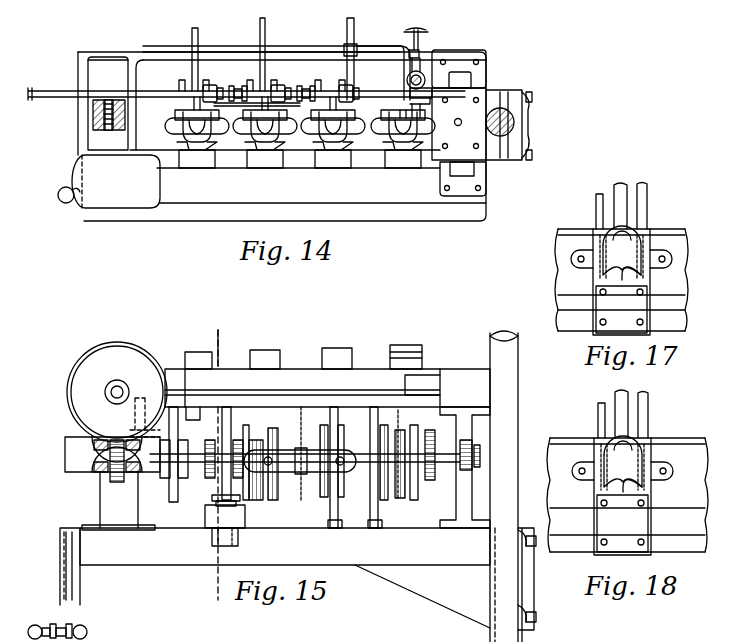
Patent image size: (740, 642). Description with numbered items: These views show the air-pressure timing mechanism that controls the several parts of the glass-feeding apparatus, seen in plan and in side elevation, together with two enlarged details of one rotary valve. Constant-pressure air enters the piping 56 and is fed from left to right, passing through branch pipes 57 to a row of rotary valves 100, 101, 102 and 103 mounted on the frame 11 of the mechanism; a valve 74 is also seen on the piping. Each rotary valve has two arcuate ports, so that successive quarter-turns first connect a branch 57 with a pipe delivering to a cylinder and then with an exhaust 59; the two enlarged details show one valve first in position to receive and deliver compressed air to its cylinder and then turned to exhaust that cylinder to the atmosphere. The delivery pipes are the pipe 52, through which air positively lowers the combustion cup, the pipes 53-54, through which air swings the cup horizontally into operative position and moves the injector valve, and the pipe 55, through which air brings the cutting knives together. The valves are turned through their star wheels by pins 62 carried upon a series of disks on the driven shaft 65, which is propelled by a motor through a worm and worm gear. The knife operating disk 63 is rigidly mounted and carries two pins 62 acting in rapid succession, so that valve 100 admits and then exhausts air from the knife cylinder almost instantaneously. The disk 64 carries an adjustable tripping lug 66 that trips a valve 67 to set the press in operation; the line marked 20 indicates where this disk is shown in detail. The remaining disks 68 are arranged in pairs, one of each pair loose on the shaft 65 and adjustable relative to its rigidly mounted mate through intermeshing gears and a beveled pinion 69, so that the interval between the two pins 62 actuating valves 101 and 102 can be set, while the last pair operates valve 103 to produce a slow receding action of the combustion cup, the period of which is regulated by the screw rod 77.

In FIG. 14, the frame / bed of the machine 11 is at (462, 176).
In FIG. 15, the frame / bed of the machine 11 is at (478, 382).
In FIG. 17, the frame / bed of the machine 11 is at (621, 280).
In FIG. 18, the frame / bed of the machine 11 is at (627, 495).
In FIG. 15, the center line of machine 20 is at (215, 457).
In FIG. 14, the pipe 52 is at (354, 40).
In FIG. 14, the pipes 53-54 is at (265, 43).
In FIG. 14, the pipe 55 is at (198, 43).
In FIG. 17, the pipe 55 is at (618, 190).
In FIG. 18, the pipe 55 is at (620, 398).
In FIG. 14, the piping 56 is at (52, 86).
In FIG. 14, the branch pipes 57 is at (214, 104).
In FIG. 17, the branch pipes 57 is at (641, 210).
In FIG. 18, the branch pipes 57 is at (642, 418).
In FIG. 17, the exhaust 59 is at (596, 212).
In FIG. 18, the exhaust 59 is at (598, 420).
In FIG. 15, the pins 62 is at (175, 362).
In FIG. 15, the knife operating disk 63 is at (173, 480).
In FIG. 15, the disk 64 is at (222, 475).
In FIG. 15, the driven shaft 65 is at (100, 466).
In FIG. 15, the tripping lug 66 is at (218, 505).
In FIG. 15, the valve 67 is at (236, 500).
In FIG. 15, the disks 68 is at (256, 490).
In FIG. 15, the beveled pinion 69 is at (262, 490).
In FIG. 14, the valve 74 is at (420, 44).
In FIG. 15, the screw rod 77 is at (408, 352).
In FIG. 14, the valve 100 is at (192, 140).
In FIG. 14, the valve 101 is at (262, 140).
In FIG. 14, the valve 102 is at (325, 140).
In FIG. 14, the valve 103 is at (396, 142).